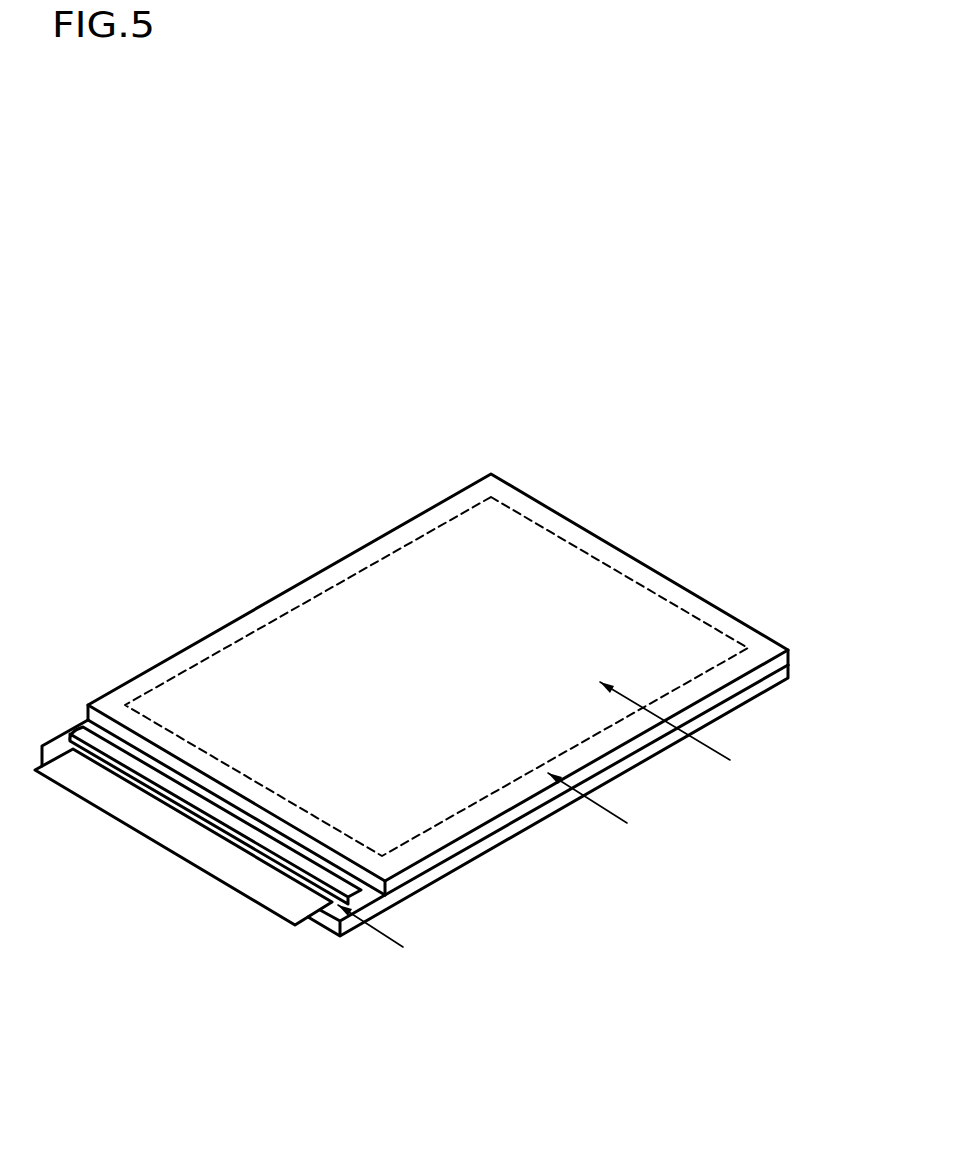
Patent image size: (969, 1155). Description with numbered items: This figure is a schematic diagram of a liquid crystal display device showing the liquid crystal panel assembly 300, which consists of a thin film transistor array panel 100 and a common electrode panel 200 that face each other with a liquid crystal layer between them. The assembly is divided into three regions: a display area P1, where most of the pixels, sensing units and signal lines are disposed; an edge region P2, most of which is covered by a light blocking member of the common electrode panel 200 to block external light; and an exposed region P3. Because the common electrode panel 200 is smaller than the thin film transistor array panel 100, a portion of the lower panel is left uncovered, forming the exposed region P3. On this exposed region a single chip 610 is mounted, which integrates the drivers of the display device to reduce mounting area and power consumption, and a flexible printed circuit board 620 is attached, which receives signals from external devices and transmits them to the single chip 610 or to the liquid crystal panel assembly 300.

The thin film transistor array panel 100 is at (790, 668).
The common electrode panel 200 is at (792, 653).
The liquid crystal panel assembly 300 is at (465, 705).
The single chip 610 is at (79, 729).
The flexible printed circuit board 620 is at (133, 833).
The display area P1 is at (677, 732).
The edge region P2 is at (600, 808).
The exposed region P3 is at (385, 938).